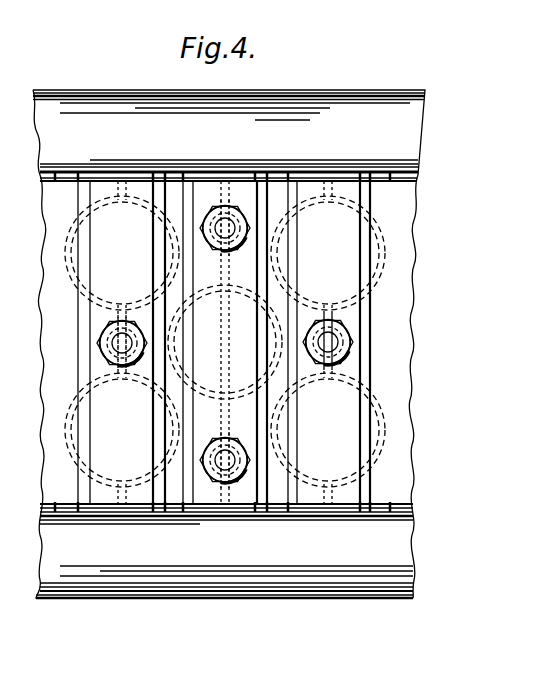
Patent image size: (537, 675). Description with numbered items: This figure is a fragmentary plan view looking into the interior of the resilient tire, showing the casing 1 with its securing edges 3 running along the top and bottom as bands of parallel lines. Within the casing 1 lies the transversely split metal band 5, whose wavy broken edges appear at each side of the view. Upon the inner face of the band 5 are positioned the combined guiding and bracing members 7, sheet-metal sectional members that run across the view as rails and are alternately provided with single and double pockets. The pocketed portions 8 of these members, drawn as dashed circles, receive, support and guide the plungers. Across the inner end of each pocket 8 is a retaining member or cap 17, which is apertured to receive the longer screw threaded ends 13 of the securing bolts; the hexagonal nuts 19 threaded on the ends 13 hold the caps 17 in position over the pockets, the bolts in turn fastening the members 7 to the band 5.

The casing 1 is at (281, 92).
The securing edges 3 is at (229, 345).
The metal band 5 is at (46, 387).
The combined guiding and bracing members 7 is at (236, 264).
The pocketed portions 8 is at (272, 298).
The screw threaded end of bolt 13 is at (229, 226).
The retaining member or cap 17 is at (382, 286).
The nuts 19 is at (218, 244).